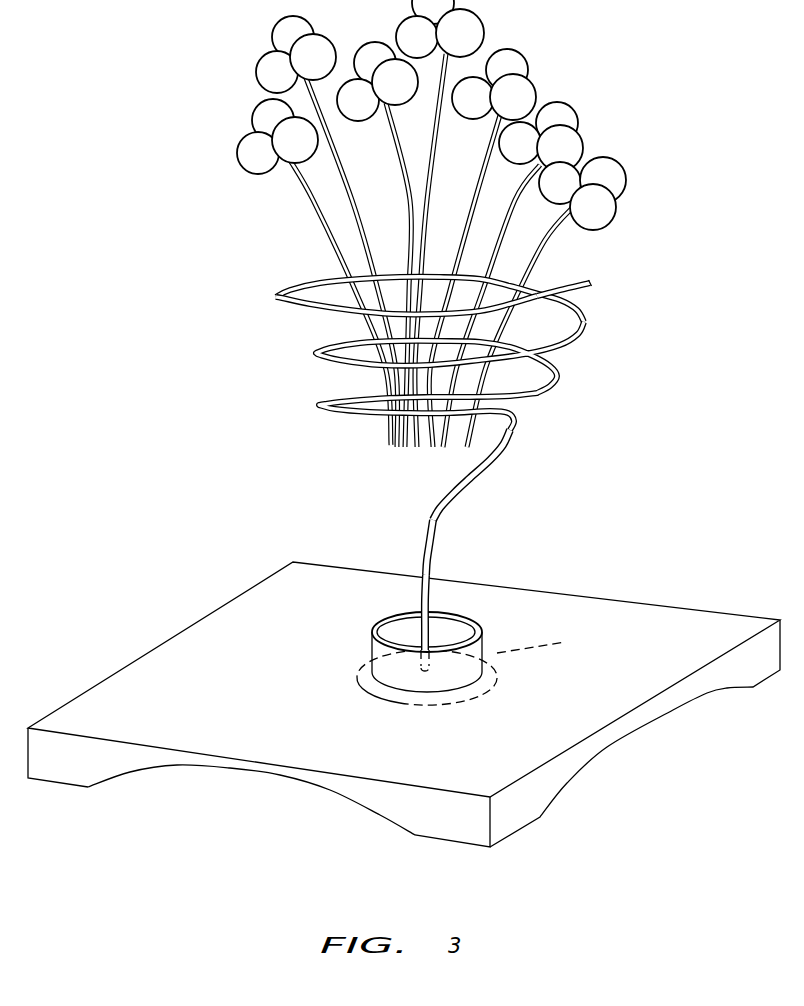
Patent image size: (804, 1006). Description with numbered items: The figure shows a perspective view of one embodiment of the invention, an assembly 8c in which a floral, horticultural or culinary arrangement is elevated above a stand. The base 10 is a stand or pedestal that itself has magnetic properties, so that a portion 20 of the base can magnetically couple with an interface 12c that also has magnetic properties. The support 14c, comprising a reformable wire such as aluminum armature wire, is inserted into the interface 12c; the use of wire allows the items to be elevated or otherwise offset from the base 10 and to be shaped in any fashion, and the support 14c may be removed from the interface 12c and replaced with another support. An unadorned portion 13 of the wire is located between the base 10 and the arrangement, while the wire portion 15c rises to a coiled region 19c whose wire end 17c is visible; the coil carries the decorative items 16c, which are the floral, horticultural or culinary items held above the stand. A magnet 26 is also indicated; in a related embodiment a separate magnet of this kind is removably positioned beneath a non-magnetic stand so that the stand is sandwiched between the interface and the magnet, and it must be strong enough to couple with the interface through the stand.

The decorative floral assembly 8c is at (404, 423).
The base 10 is at (237, 600).
The interface 12c is at (372, 621).
The unadorned portion 13 is at (433, 590).
The support 14c is at (418, 550).
The vertical wire portion 15c is at (425, 540).
The ornamental ball elements 16c is at (300, 188).
The spiral coil end 17c is at (591, 284).
The spiral coil 19c is at (316, 351).
The portion of the base 20 is at (360, 691).
The magnet 26 is at (545, 641).